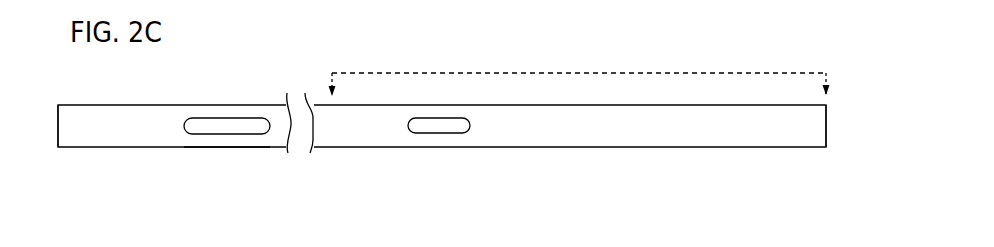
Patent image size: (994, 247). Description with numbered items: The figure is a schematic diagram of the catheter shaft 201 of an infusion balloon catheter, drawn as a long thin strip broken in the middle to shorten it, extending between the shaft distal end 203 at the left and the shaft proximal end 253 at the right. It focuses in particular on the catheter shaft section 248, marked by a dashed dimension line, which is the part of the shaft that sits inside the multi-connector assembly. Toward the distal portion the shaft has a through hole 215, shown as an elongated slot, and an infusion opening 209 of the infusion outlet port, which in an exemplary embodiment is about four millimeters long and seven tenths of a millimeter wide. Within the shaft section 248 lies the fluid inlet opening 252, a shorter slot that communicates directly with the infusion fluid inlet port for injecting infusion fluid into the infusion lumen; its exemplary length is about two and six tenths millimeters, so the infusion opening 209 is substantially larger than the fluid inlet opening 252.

The shaft 201 is at (305, 65).
The shaft distal end 203 is at (56, 148).
The infusion opening 209 is at (221, 136).
The through hole 215 is at (222, 126).
The catheter shaft section 248 is at (579, 72).
The fluid inlet opening 252 is at (438, 136).
The shaft proximal end 253 is at (828, 148).